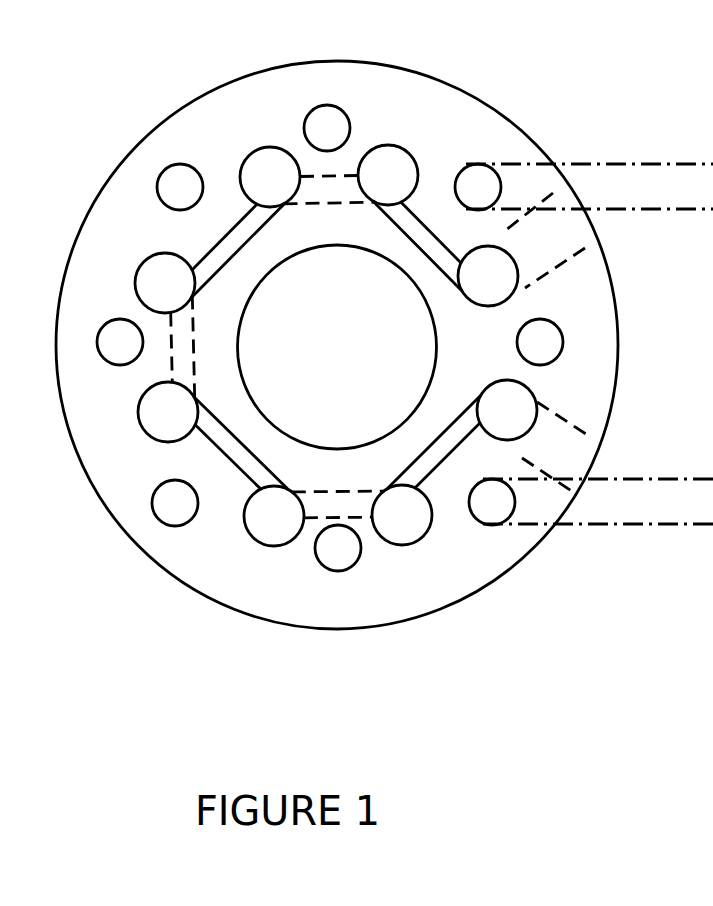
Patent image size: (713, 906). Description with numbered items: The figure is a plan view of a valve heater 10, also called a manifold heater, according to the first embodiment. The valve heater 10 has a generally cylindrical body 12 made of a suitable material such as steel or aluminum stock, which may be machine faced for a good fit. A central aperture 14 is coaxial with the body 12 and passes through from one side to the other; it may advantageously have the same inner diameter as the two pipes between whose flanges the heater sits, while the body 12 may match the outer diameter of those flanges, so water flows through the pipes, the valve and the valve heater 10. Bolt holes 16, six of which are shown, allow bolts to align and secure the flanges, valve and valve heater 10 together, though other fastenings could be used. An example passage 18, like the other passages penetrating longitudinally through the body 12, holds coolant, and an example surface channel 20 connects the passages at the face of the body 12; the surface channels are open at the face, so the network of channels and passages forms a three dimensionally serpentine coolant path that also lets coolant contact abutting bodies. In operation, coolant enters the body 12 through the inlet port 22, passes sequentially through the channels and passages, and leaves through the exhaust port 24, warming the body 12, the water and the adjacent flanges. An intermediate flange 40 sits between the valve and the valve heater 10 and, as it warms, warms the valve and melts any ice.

The valve heater 10 is at (140, 624).
The body 12 is at (100, 497).
The aperture 14 is at (329, 358).
The bolt holes 16 is at (168, 166).
The passage 18 is at (270, 147).
The surface channel 20 is at (363, 520).
The inlet port 22 is at (598, 462).
The exhaust port 24 is at (586, 245).
The intermediate flange 40 is at (704, 661).